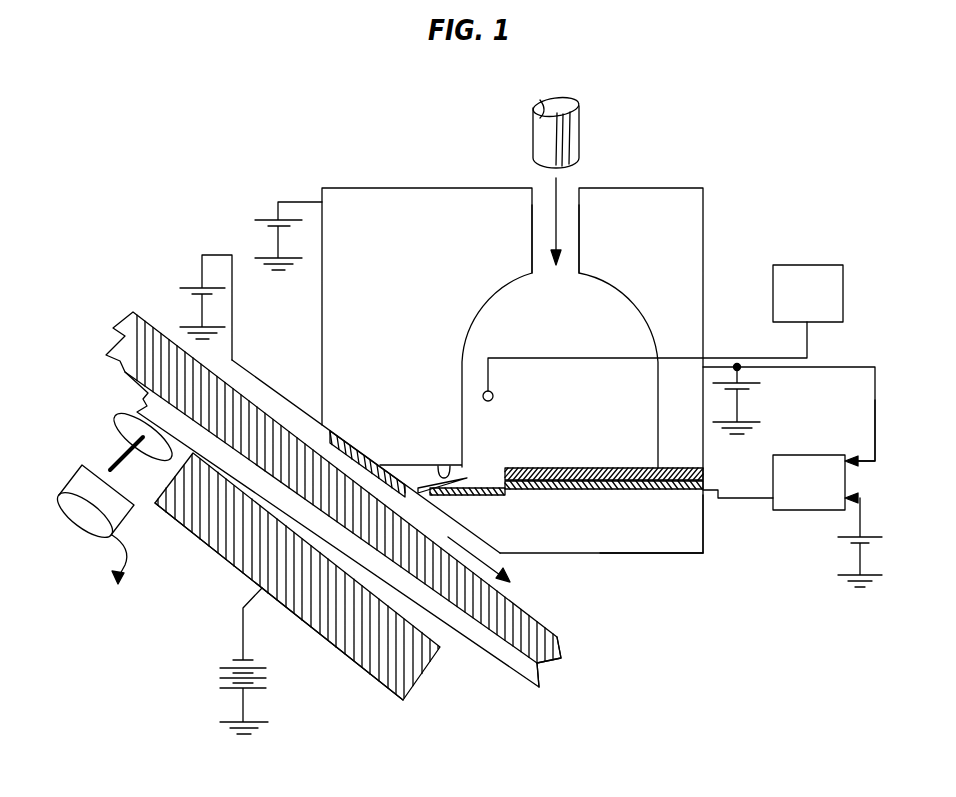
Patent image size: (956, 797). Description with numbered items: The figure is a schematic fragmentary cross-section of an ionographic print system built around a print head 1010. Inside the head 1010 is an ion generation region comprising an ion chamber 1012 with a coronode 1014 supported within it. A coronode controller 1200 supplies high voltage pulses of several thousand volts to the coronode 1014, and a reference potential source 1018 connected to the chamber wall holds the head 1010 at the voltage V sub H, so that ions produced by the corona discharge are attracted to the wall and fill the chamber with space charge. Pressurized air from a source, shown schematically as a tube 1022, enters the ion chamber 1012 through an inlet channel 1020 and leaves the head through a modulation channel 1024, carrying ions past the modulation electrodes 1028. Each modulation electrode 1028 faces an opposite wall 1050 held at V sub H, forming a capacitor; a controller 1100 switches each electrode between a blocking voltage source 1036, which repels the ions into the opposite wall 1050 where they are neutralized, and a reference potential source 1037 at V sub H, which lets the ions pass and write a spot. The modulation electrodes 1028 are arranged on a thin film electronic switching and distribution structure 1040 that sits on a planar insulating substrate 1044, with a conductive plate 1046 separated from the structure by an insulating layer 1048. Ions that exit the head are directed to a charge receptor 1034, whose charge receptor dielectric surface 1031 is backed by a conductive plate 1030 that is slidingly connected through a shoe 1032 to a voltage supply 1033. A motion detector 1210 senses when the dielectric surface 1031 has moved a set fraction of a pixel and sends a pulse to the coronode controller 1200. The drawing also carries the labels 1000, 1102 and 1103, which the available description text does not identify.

The belt 1000 is at (328, 424).
The head 1010 is at (704, 231).
The ion chamber 1012 is at (600, 280).
The coronode 1014 is at (494, 396).
The reference potential source 1018 is at (270, 220).
The inlet channel 1020 is at (533, 265).
The tube 1022 is at (578, 138).
The modulation channel 1024 is at (420, 486).
The modulation electrodes 1028 is at (470, 488).
The conductive plate 1030 is at (460, 663).
The charge receptor dielectric surface 1031 is at (533, 622).
The shoe 1032 is at (372, 676).
The voltage supply 1033 is at (255, 668).
The charge receptor 1034 is at (588, 642).
The blocking voltage source 1036 is at (870, 545).
The reference potential source 1037 is at (866, 459).
The thin film electronic switching and distribution structure 1040 is at (703, 514).
The planar insulating substrate 1044 is at (703, 554).
The conductive plate 1046 is at (704, 472).
The insulating layer 1048 is at (703, 486).
The opposite wall 1050 is at (446, 463).
The controller 1100 is at (809, 482).
The toner layer 1102 is at (340, 433).
The voltage source VE 1103 is at (194, 288).
The coronode controller 1200 is at (808, 293).
The motion detector 1210 is at (66, 483).